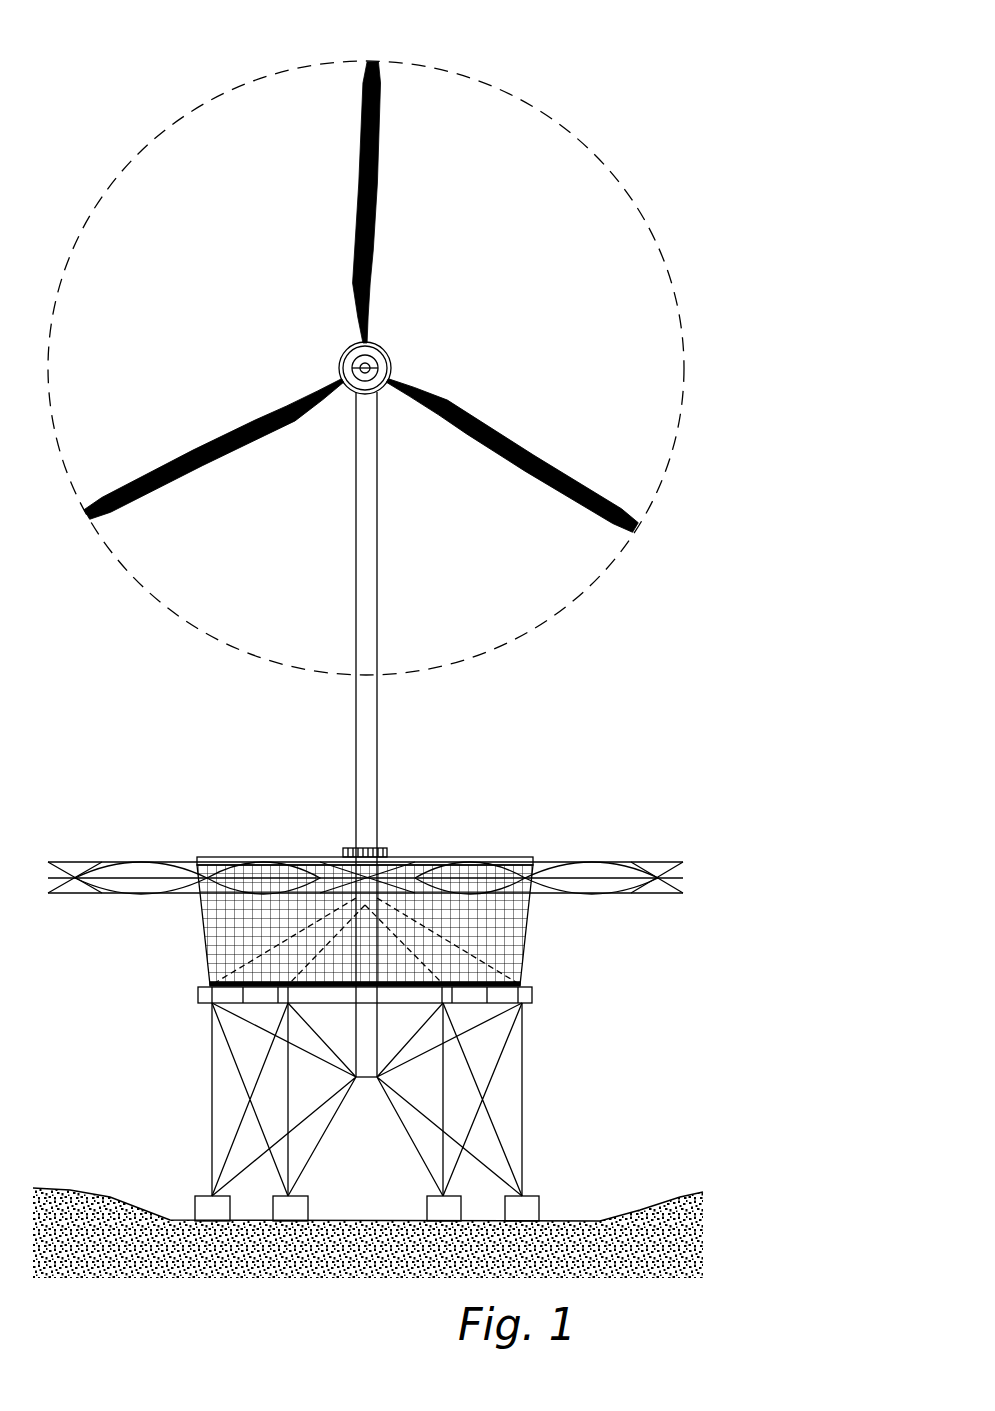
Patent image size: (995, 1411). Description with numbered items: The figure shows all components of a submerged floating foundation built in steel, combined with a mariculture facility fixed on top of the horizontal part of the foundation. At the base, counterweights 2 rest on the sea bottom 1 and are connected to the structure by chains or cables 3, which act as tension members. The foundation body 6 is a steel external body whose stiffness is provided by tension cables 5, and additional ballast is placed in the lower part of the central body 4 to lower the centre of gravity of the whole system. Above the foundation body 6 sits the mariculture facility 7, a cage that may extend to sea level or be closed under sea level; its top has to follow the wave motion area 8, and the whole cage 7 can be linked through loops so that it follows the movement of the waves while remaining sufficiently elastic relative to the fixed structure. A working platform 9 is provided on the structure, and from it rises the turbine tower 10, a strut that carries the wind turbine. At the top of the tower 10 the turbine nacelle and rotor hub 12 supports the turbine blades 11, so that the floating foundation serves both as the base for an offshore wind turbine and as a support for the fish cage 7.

The sea bottom 1 is at (710, 1221).
The counterweights 2 is at (543, 1203).
The chains or cables 3 is at (526, 1122).
The lower part of central body with ballast 4 is at (383, 1047).
The tension cables 5 is at (485, 962).
The foundation body 6 is at (197, 993).
The mariculture facility 7 is at (534, 935).
The wave motion area 8 is at (642, 861).
The working platform 9 is at (391, 848).
The turbine tower 10 is at (381, 738).
The turbine blades 11 is at (544, 455).
The turbine nacelle and rotor hub 12 is at (388, 352).